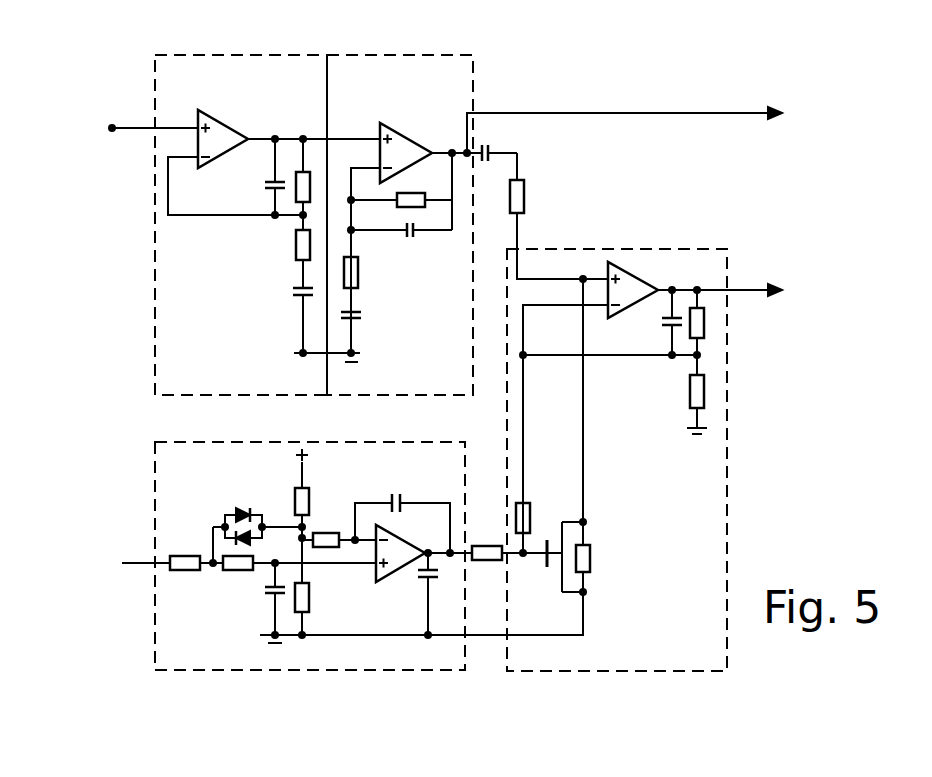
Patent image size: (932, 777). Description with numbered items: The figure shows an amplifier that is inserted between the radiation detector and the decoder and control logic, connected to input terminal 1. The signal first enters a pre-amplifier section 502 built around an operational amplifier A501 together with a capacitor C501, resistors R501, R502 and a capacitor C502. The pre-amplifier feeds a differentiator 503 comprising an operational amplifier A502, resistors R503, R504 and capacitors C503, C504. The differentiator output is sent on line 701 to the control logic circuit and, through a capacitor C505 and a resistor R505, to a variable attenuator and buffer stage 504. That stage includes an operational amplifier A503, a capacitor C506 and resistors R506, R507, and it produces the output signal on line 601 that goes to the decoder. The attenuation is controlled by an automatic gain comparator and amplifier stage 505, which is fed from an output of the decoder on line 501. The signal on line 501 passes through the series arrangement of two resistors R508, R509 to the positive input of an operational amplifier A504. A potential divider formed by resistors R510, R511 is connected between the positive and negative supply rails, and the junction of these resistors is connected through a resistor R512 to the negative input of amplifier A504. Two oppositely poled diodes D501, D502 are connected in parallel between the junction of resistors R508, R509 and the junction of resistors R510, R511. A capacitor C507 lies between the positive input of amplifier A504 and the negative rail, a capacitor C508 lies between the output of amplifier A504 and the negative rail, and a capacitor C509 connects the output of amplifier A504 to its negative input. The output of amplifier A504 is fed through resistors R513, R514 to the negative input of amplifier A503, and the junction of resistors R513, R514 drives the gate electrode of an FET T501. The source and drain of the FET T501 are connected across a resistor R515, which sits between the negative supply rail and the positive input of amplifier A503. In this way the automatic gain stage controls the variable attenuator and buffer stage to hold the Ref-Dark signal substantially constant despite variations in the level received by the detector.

The input terminal 1 is at (146, 128).
The line 501 is at (121, 563).
The line 601 is at (801, 291).
The line 701 is at (801, 114).
The pre-amplifier section 502 is at (213, 52).
The differentiator 503 is at (413, 52).
The variable attenuator and buffer stage 504 is at (683, 250).
The automatic gain comparator and amplifier stage 505 is at (413, 443).
The operational amplifier A501 is at (241, 130).
The operational amplifier A502 is at (406, 141).
The operational amplifier A503 is at (638, 282).
The operational amplifier A504 is at (378, 533).
The capacitor C501 is at (267, 184).
The capacitor C502 is at (293, 292).
The capacitor C503 is at (401, 244).
The capacitor C504 is at (385, 318).
The capacitor C505 is at (488, 146).
The capacitor C506 is at (665, 322).
The capacitor C507 is at (267, 589).
The capacitor C508 is at (422, 573).
The capacitor C509 is at (402, 511).
The resistor R501 is at (296, 192).
The resistor R502 is at (296, 245).
The resistor R503 is at (425, 207).
The resistor R504 is at (358, 272).
The resistor R505 is at (559, 216).
The resistor R506 is at (705, 320).
The resistor R507 is at (705, 392).
The resistor R508 is at (178, 557).
The resistor R509 is at (223, 570).
The resistor R510 is at (293, 500).
The resistor R511 is at (290, 602).
The resistor R512 is at (330, 547).
The resistor R513 is at (487, 560).
The resistor R514 is at (532, 512).
The resistor R515 is at (620, 559).
The diode D501 is at (240, 512).
The diode D502 is at (237, 537).
The FET T501 is at (552, 562).